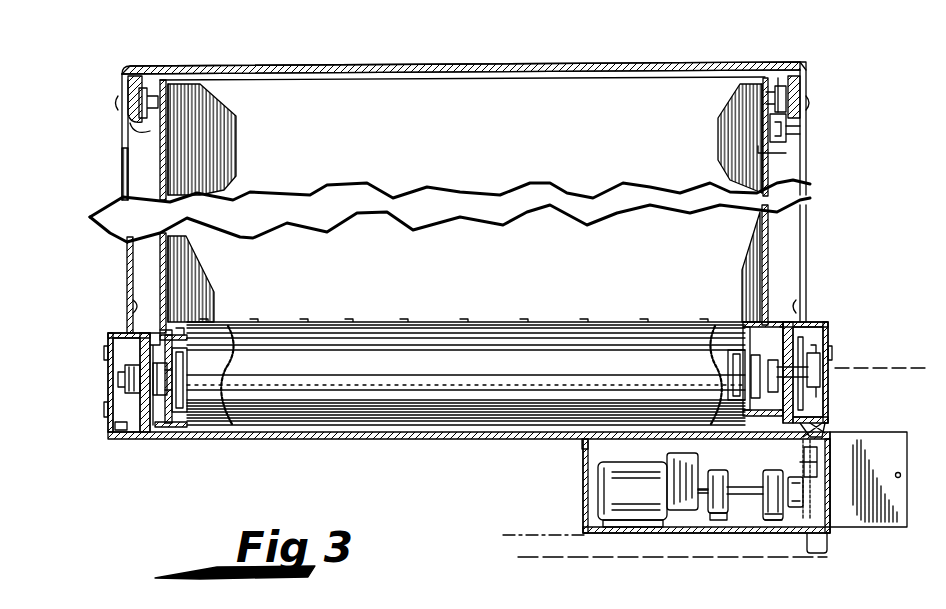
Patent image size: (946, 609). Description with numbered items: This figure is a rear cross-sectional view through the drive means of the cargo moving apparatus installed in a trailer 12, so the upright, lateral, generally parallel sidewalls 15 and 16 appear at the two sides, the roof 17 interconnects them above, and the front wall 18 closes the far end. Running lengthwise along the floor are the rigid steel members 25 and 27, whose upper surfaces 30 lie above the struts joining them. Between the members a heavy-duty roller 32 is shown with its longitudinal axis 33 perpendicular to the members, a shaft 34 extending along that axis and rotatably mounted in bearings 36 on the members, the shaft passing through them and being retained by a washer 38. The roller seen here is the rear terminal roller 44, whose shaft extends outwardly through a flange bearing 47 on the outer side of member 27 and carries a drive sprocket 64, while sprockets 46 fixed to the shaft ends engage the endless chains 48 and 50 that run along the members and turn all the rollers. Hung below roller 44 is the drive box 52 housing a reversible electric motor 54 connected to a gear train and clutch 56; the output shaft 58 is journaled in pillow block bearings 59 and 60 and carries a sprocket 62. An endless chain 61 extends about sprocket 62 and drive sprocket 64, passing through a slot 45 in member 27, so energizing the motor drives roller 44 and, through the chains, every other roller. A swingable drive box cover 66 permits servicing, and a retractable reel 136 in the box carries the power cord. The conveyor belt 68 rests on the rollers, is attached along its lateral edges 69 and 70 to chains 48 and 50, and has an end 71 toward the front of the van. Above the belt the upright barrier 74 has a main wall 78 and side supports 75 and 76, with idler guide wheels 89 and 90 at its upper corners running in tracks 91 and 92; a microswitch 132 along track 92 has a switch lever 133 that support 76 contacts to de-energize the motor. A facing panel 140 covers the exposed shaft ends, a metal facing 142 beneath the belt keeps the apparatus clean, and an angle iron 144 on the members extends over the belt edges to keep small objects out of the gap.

The trailer 12 is at (553, 46).
The sidewall 15 is at (90, 217).
The sidewall 16 is at (806, 197).
The roof 17 is at (450, 65).
The front wall 18 is at (130, 170).
The member 25 is at (109, 335).
The member 27 is at (824, 327).
The upper surface 30 is at (127, 331).
The roller 32 is at (714, 0).
The longitudinal axis 33 is at (924, 368).
The shaft 34 is at (125, 392).
The bearing 36 is at (118, 409).
The washer 38 is at (118, 379).
The rear terminal roller 44 is at (232, 377).
The slot 45 is at (826, 407).
The sprocket 46 is at (204, 402).
The flange bearing 47 is at (821, 386).
The endless chain 48 is at (192, 341).
The endless chain 50 is at (750, 334).
The drive box 52 is at (556, 509).
The reversible electric motor 54 is at (643, 500).
The gear train and clutch 56 is at (688, 512).
The output shaft 58 is at (703, 494).
The pillow block bearing 59 is at (720, 470).
The pillow block bearing 60 is at (763, 506).
The endless chain 61 is at (840, 437).
The sprocket 62 is at (792, 478).
The drive sprocket 64 is at (826, 355).
The drive box cover 66 is at (872, 527).
The conveyor belt 68 is at (435, 352).
The lateral edge 69 is at (170, 331).
The lateral edge 70 is at (761, 330).
The end 71 is at (312, 324).
The barrier 74 is at (140, 259).
The side support 75 is at (178, 161).
The side support 76 is at (745, 166).
The main wall 78 is at (372, 151).
The idler guide wheel 89 is at (143, 90).
The idler guide wheel 90 is at (800, 80).
The track 91 is at (130, 127).
The track 92 is at (782, 78).
The microswitch 132 is at (768, 129).
The switch lever 133 is at (790, 153).
The retractable reel 136 is at (817, 478).
The facing panel 140 is at (104, 352).
The metal facing 142 is at (249, 441).
The angle iron 144 is at (135, 298).